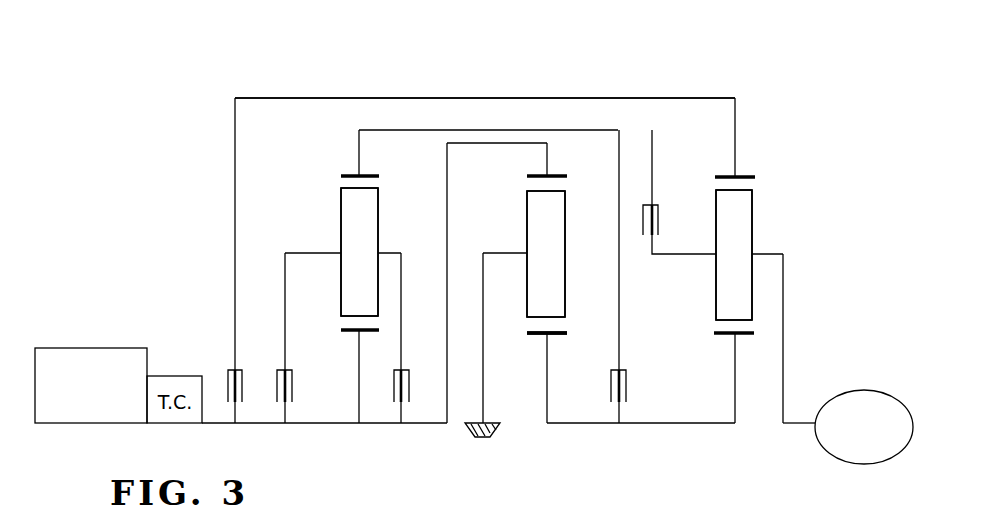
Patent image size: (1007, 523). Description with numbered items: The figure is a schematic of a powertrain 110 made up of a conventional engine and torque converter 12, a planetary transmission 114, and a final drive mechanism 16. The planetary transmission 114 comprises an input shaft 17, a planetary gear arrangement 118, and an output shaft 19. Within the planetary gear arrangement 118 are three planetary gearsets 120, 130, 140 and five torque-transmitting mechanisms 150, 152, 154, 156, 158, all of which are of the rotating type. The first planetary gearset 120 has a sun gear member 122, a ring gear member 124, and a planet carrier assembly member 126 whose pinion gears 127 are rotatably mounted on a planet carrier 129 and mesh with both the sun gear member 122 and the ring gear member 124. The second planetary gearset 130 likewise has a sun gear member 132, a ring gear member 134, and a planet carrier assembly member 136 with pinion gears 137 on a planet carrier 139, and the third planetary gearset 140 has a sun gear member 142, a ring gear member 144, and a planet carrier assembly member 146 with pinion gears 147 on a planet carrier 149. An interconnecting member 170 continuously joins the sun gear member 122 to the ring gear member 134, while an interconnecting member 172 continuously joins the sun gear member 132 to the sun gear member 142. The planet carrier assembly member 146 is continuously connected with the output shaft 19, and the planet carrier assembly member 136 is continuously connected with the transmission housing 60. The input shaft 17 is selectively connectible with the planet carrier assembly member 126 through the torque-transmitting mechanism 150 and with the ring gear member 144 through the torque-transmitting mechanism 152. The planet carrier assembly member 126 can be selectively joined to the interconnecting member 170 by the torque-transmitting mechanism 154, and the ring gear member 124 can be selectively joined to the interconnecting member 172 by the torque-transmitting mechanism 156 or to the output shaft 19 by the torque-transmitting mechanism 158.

The engine and torque converter 12 is at (93, 338).
The final drive mechanism 16 is at (893, 383).
The input shaft 17 is at (222, 425).
The output shaft 19 is at (802, 425).
The transmission housing 60 is at (480, 438).
The powertrain 110 is at (150, 192).
The planetary transmission 114 is at (506, 58).
The planetary gear arrangement 118 is at (525, 428).
The planetary gearset 120 is at (329, 332).
The sun gear member 122 is at (375, 326).
The ring gear member 124 is at (358, 175).
The planet carrier assembly member 126 is at (334, 182).
The pinion gears 127 is at (340, 232).
The planet carrier 129 is at (308, 256).
The planetary gearset 130 is at (517, 338).
The sun gear member 132 is at (556, 338).
The ring gear member 134 is at (555, 174).
The planet carrier assembly member 136 is at (518, 189).
The pinion gears 137 is at (557, 257).
The planet carrier 139 is at (497, 252).
The planetary gearset 140 is at (709, 331).
The sun gear member 142 is at (745, 336).
The ring gear member 144 is at (745, 176).
The planet carrier assembly member 146 is at (710, 181).
The pinion gears 147 is at (718, 217).
The planet carrier 149 is at (770, 253).
The torque-transmitting mechanism 150 is at (293, 402).
The torque-transmitting mechanism 152 is at (221, 363).
The torque-transmitting mechanism 154 is at (411, 401).
The torque-transmitting mechanism 156 is at (631, 400).
The torque-transmitting mechanism 158 is at (661, 230).
The interconnecting member 170 is at (470, 142).
The interconnecting member 172 is at (666, 422).